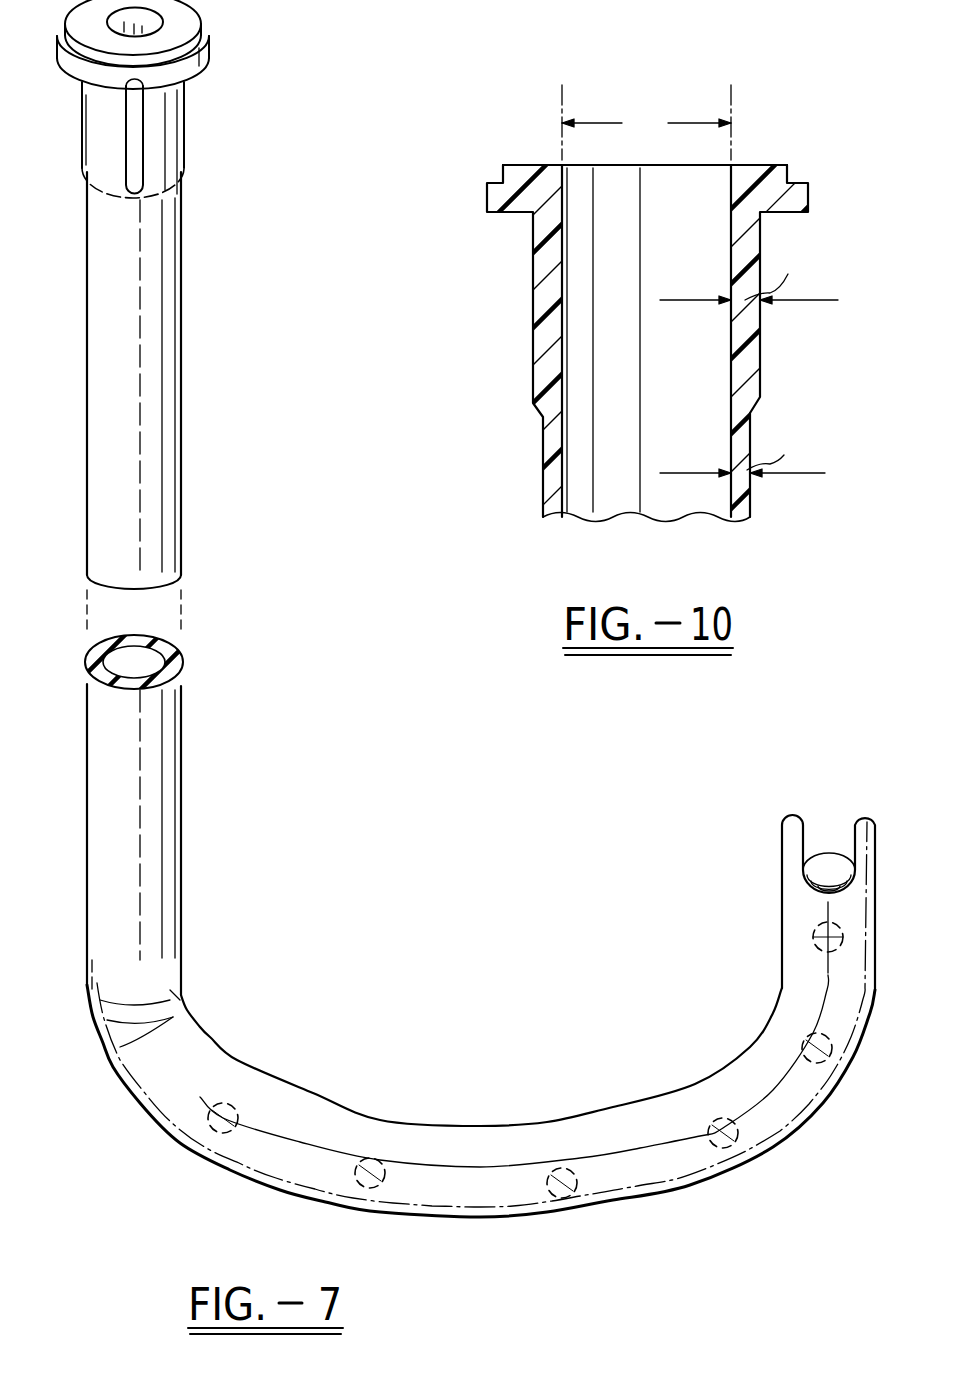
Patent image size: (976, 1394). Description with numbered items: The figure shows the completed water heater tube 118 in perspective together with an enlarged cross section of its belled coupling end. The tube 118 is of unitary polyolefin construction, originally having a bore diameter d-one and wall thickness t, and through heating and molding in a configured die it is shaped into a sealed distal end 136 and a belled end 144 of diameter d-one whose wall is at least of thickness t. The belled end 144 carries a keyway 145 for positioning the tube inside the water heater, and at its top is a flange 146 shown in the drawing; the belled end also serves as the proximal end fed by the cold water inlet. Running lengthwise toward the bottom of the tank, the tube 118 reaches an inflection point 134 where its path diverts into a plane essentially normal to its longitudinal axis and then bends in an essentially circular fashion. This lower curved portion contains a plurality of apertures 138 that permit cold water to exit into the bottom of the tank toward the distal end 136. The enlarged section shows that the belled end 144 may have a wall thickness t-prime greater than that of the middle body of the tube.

In FIG. 7, the water heater tube 118 is at (193, 752).
In FIG. 7, the inflection point 134 is at (177, 1025).
In FIG. 7, the sealed distal end 136 is at (815, 862).
In FIG. 7, the apertures 138 is at (560, 1168).
In FIG. 7, the belled end 144 is at (187, 110).
In FIG. 10, the belled end 144 is at (519, 307).
In FIG. 7, the keyway 145 is at (135, 132).
In FIG. 7, the flange 146 is at (207, 43).
In FIG. 10, the flange 146 is at (810, 190).